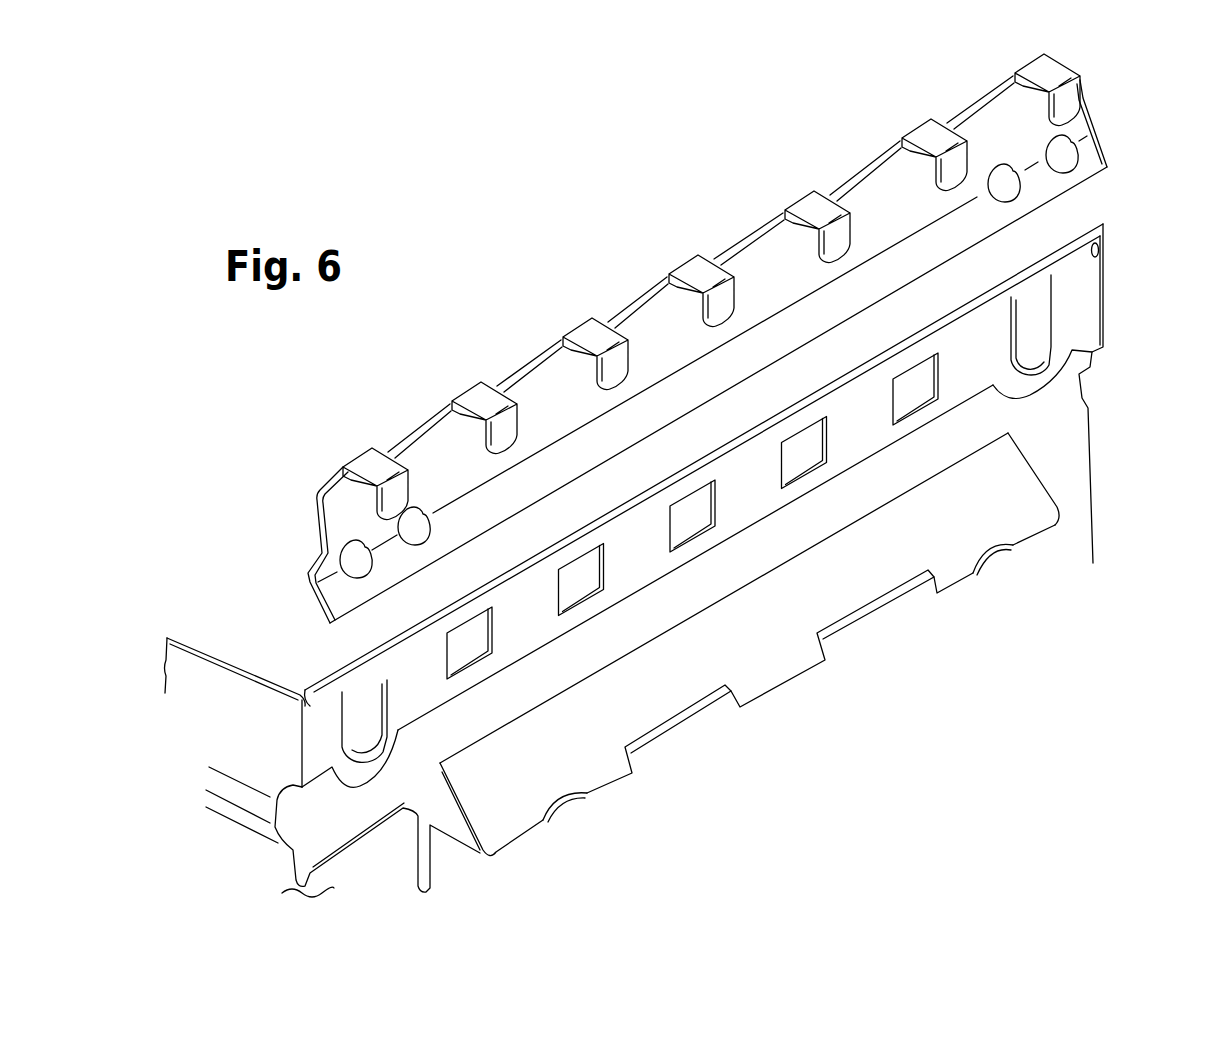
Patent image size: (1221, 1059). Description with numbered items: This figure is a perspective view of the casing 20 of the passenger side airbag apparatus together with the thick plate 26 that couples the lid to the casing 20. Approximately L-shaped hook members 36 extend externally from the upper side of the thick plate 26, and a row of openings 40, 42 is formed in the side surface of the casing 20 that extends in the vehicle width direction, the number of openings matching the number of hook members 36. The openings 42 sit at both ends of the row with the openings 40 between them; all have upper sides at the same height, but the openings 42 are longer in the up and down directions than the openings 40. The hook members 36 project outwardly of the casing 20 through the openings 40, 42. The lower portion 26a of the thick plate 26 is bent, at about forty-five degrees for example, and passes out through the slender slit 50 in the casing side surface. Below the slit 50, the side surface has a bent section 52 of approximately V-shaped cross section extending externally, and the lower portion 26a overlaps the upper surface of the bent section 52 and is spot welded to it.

The casing 20 is at (1112, 287).
The thick plate 26 is at (628, 302).
The lower portion of the thick plate 26a is at (650, 415).
The hook members 36 is at (409, 476).
The openings 40 is at (492, 633).
The openings 42 is at (376, 707).
The slit 50 is at (652, 627).
The bent section 52 is at (768, 660).